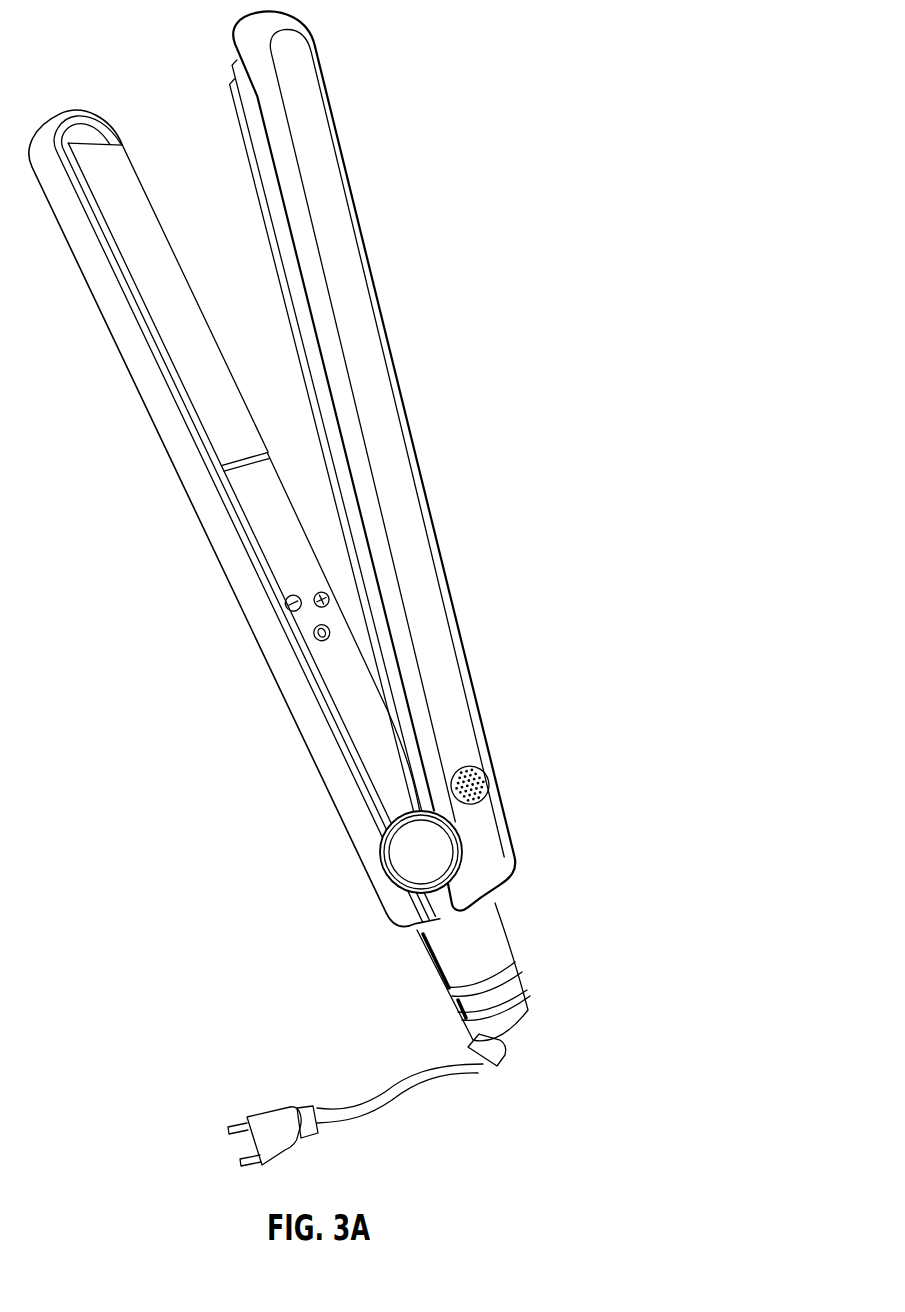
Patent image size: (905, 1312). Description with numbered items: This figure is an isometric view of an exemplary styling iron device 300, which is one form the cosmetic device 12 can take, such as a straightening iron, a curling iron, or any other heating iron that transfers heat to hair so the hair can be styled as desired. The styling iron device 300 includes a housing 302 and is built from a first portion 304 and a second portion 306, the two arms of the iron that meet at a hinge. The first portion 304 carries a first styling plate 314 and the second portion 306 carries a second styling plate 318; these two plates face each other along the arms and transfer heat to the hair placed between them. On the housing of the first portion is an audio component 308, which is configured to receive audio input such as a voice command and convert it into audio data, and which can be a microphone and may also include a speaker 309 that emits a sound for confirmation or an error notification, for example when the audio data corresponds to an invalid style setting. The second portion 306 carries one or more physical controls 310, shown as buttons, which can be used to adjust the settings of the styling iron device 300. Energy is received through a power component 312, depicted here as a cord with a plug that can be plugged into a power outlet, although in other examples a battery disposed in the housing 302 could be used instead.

The cosmetic device 12 is at (338, 583).
The styling iron device 300 is at (338, 583).
The housing 302 is at (369, 459).
The first portion 304 is at (377, 457).
The second portion 306 is at (249, 516).
The audio component 308 is at (470, 785).
The speaker 309 is at (470, 785).
The physical controls 310 is at (314, 615).
The power component 312 is at (287, 1103).
The first styling plate 314 is at (323, 438).
The second styling plate 318 is at (169, 301).